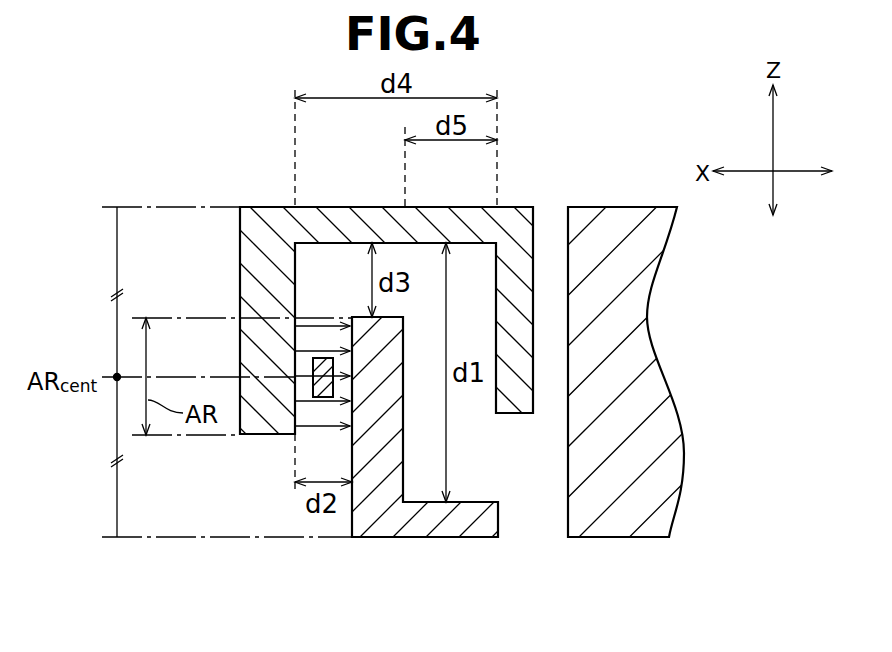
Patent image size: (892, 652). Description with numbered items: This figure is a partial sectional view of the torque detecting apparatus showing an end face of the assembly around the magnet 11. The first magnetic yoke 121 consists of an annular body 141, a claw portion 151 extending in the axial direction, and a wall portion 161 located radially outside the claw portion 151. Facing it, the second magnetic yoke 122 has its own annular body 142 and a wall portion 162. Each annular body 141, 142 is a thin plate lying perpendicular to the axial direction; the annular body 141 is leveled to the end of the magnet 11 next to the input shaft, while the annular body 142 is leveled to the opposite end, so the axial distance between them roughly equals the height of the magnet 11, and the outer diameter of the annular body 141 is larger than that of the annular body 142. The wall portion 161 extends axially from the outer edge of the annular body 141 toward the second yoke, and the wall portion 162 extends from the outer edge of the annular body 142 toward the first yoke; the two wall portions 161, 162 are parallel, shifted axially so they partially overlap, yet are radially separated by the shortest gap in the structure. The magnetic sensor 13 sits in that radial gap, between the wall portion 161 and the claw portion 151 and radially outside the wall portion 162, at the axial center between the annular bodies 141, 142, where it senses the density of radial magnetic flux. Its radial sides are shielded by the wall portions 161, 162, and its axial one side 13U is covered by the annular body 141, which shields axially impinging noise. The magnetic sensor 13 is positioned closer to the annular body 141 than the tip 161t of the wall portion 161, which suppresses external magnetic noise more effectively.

The magnet 11 is at (628, 215).
The first magnetic yoke 121 is at (345, 205).
The second magnetic yoke 122 is at (405, 538).
The annular body 141 is at (440, 207).
The annular body 142 is at (467, 532).
The claw portion 151 is at (527, 268).
The wall portion 161 is at (240, 292).
The tip of the wall portion 161t is at (255, 436).
The wall portion 162 is at (352, 518).
The magnetic sensor 13 is at (330, 397).
The axial one side of the magnetic sensor 13U is at (325, 358).